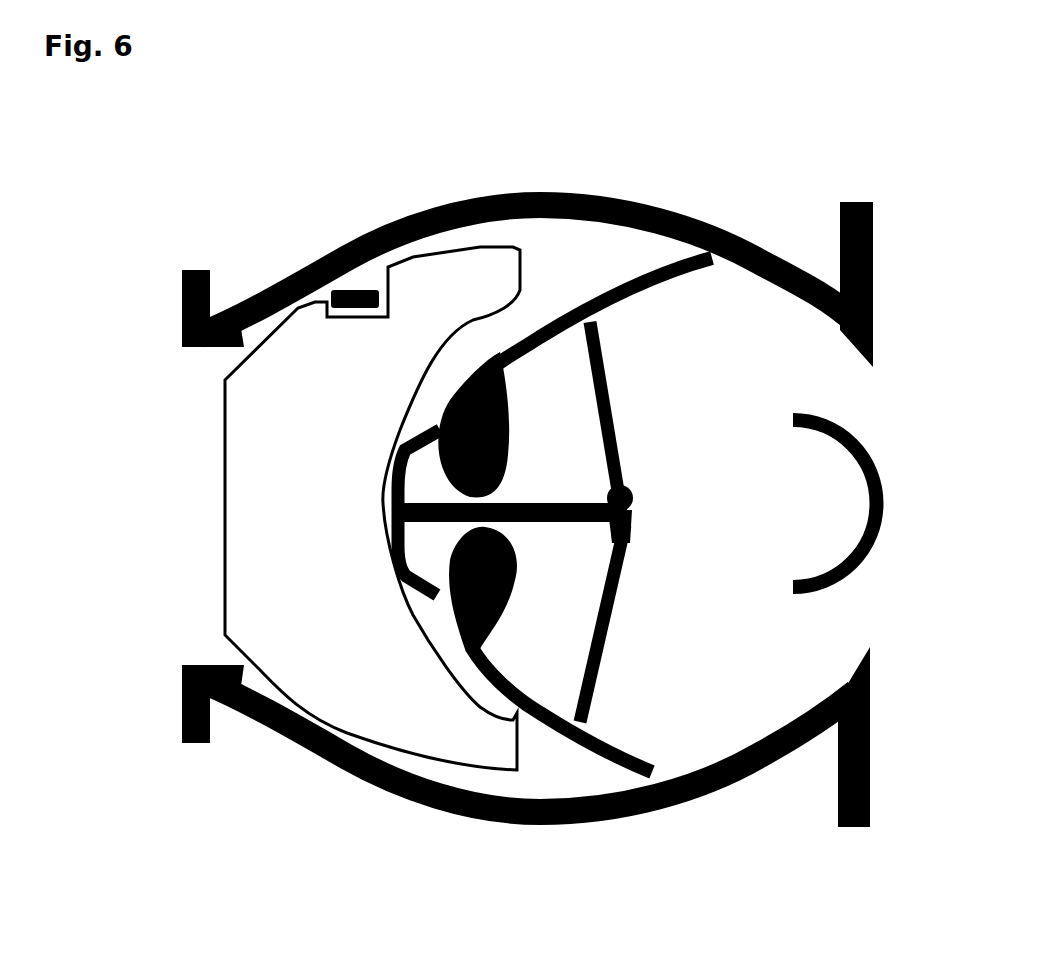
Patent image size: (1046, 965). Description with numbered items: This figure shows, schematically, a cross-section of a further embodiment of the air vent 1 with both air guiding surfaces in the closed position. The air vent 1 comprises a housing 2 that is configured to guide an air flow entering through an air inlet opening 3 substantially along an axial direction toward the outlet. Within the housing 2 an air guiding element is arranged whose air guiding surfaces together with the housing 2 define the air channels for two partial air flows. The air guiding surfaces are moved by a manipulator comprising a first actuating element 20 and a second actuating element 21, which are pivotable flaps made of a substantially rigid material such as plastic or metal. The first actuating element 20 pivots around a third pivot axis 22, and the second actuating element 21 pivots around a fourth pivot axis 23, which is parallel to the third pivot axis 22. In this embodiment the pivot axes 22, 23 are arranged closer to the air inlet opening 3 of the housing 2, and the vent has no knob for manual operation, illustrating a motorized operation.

The air vent 1 is at (288, 250).
The housing 2 is at (650, 207).
The air inlet opening 3 is at (186, 582).
The first actuating element 20 is at (610, 401).
The second actuating element 21 is at (603, 637).
The third pivot axis 22 is at (633, 491).
The fourth pivot axis 23 is at (630, 522).